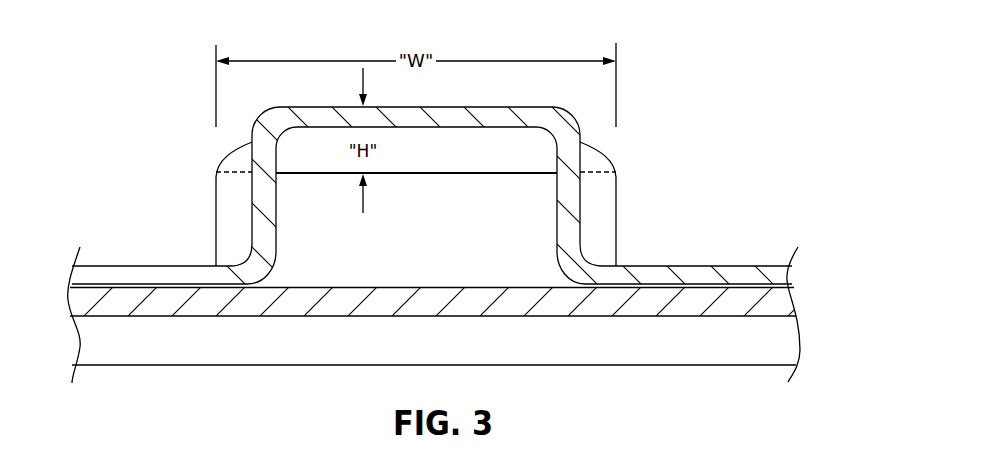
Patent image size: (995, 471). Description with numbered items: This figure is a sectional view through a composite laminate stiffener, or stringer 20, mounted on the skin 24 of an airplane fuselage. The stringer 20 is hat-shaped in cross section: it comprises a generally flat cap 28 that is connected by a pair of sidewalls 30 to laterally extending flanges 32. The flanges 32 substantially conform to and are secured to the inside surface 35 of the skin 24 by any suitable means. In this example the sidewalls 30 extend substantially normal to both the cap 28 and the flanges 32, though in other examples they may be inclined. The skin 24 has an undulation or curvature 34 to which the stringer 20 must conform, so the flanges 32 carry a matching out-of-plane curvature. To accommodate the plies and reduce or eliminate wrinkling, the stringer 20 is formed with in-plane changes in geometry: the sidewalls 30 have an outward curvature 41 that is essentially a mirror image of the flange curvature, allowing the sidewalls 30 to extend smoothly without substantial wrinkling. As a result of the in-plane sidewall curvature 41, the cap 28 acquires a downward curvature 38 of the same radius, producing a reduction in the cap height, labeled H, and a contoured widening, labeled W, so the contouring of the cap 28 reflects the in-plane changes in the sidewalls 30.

The stiffener 20 is at (639, 80).
The skin 24 is at (212, 304).
The cap 28 is at (320, 118).
The sidewall 30 is at (263, 190).
The flange 32 is at (113, 275).
The curvature 34 is at (765, 342).
The inside surface 35 is at (373, 282).
The downward curvature 38 is at (487, 140).
The outward curvature 41 is at (222, 228).